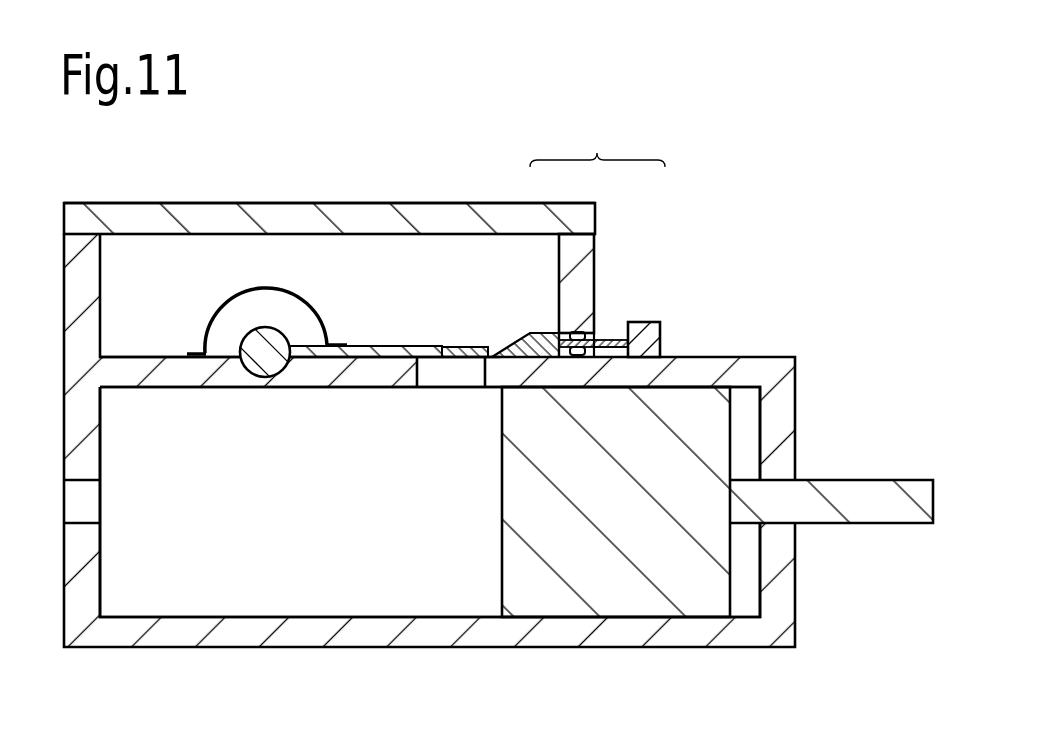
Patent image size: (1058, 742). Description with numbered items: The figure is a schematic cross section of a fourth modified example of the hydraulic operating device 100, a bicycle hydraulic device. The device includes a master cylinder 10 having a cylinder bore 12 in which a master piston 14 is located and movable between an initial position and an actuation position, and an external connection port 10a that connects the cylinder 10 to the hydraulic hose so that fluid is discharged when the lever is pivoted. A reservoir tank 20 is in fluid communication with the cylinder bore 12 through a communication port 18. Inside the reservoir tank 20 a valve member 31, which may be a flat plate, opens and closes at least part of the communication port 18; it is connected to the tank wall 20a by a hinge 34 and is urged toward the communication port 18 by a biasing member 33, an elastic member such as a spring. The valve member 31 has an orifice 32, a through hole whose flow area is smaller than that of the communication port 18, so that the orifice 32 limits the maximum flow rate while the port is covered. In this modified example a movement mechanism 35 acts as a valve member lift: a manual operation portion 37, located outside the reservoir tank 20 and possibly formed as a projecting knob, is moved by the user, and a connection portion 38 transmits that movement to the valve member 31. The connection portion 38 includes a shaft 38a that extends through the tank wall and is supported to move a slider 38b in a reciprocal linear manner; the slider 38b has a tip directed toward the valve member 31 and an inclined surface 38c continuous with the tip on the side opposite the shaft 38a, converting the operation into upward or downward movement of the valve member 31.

The master cylinder 10 is at (700, 357).
The external connection port 10a is at (67, 518).
The master cylinder bore 12 is at (186, 387).
The master piston 14 is at (553, 598).
The communication port 18 is at (418, 375).
The reservoir tank 20 is at (585, 272).
The tank wall 20a is at (137, 357).
The valve member 31 is at (383, 345).
The orifice 32 is at (453, 355).
The biasing member 33 is at (297, 292).
The hinge 34 is at (270, 325).
The movement mechanism 35 is at (597, 144).
The manual operation portion 37 is at (650, 322).
The connection portion 38 is at (549, 259).
The shaft 38a is at (611, 340).
The slider 38b is at (497, 355).
The inclined surface 38c is at (516, 345).
The hydraulic operating device 100 is at (773, 178).